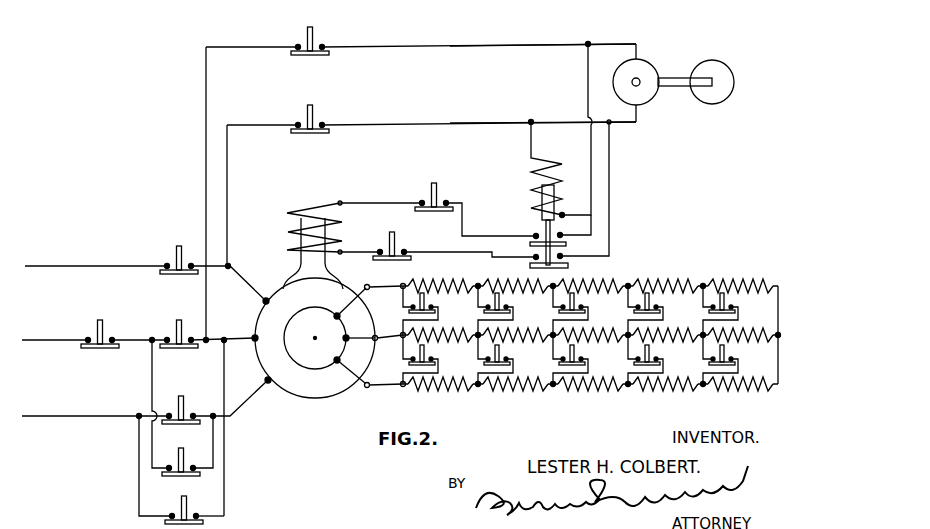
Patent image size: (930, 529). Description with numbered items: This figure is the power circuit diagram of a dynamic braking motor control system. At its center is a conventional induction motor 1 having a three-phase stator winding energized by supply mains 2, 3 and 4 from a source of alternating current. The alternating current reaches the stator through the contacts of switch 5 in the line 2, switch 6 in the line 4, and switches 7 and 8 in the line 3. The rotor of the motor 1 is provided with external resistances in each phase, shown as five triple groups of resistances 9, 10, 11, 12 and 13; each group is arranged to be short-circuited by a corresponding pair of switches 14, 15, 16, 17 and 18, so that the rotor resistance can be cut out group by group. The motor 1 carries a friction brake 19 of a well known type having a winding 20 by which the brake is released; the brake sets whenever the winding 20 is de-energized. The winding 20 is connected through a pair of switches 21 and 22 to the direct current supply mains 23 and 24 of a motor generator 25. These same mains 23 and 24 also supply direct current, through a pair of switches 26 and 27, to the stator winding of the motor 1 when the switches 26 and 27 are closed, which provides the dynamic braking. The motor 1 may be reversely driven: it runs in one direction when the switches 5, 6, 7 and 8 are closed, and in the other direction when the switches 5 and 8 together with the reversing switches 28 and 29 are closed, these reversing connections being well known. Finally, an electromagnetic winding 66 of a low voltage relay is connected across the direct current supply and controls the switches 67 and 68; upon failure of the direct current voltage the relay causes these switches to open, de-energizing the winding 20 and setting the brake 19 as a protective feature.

The induction motor 1 is at (322, 390).
The supply main 2 is at (79, 266).
The supply main 3 is at (48, 339).
The supply main 4 is at (59, 413).
The switch 5 is at (172, 262).
The switch 6 is at (192, 413).
The switch 7 is at (192, 337).
The switch 8 is at (108, 337).
The external resistance group 9 is at (453, 387).
The external resistance group 10 is at (526, 387).
The external resistance group 11 is at (601, 387).
The external resistance group 12 is at (662, 386).
The external resistance group 13 is at (742, 386).
The short-circuiting switch pair 14 is at (428, 303).
The short-circuiting switch pair 15 is at (503, 303).
The short-circuiting switch pair 16 is at (578, 303).
The short-circuiting switch pair 17 is at (653, 303).
The short-circuiting switch pair 18 is at (728, 303).
The friction brake 19 is at (289, 276).
The brake winding 20 is at (340, 236).
The switch 21 is at (386, 251).
The switch 22 is at (441, 200).
The direct current supply main 23 is at (548, 45).
The direct current supply main 24 is at (551, 120).
The motor generator 25 is at (645, 97).
The switch 26 is at (322, 120).
The switch 27 is at (322, 44).
The reversing switch 28 is at (192, 517).
The reversing switch 29 is at (188, 466).
The low voltage relay winding 66 is at (541, 159).
The relay switch 67 is at (559, 238).
The relay switch 68 is at (563, 258).